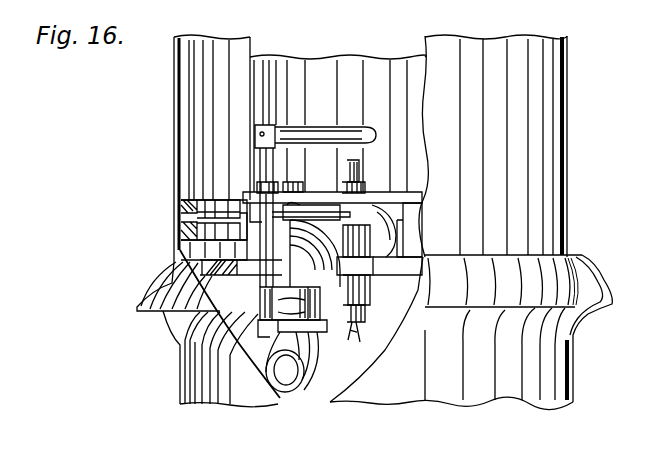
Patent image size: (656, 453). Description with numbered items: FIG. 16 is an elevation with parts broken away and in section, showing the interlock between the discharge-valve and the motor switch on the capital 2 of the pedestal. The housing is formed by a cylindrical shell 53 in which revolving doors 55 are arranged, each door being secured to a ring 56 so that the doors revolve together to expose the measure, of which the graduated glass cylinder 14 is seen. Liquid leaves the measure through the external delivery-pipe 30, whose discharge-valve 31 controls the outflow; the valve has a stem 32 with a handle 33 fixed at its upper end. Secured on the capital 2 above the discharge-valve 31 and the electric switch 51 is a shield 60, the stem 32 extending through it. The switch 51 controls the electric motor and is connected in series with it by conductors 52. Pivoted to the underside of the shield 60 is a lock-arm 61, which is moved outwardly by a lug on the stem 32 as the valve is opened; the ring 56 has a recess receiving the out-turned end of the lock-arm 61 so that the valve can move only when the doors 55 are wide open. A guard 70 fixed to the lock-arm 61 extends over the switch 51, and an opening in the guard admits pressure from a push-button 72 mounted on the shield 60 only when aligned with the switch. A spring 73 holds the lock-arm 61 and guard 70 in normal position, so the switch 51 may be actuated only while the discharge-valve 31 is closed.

The capital 2 is at (588, 278).
The glass cylinder 14 is at (328, 55).
The delivery-pipe 30 is at (297, 392).
The discharge-valve 31 is at (272, 303).
The stem 32 is at (267, 156).
The handle 33 is at (321, 126).
The electric switch 51 is at (368, 243).
The conductors 52 is at (356, 344).
The cylindrical shell 53 is at (178, 142).
The revolving doors 55 is at (180, 106).
The ring 56 is at (182, 193).
The shield 60 is at (408, 192).
The lock-arm 61 is at (278, 202).
The guard 70 is at (363, 222).
The push-button 72 is at (364, 158).
The spring 73 is at (291, 212).